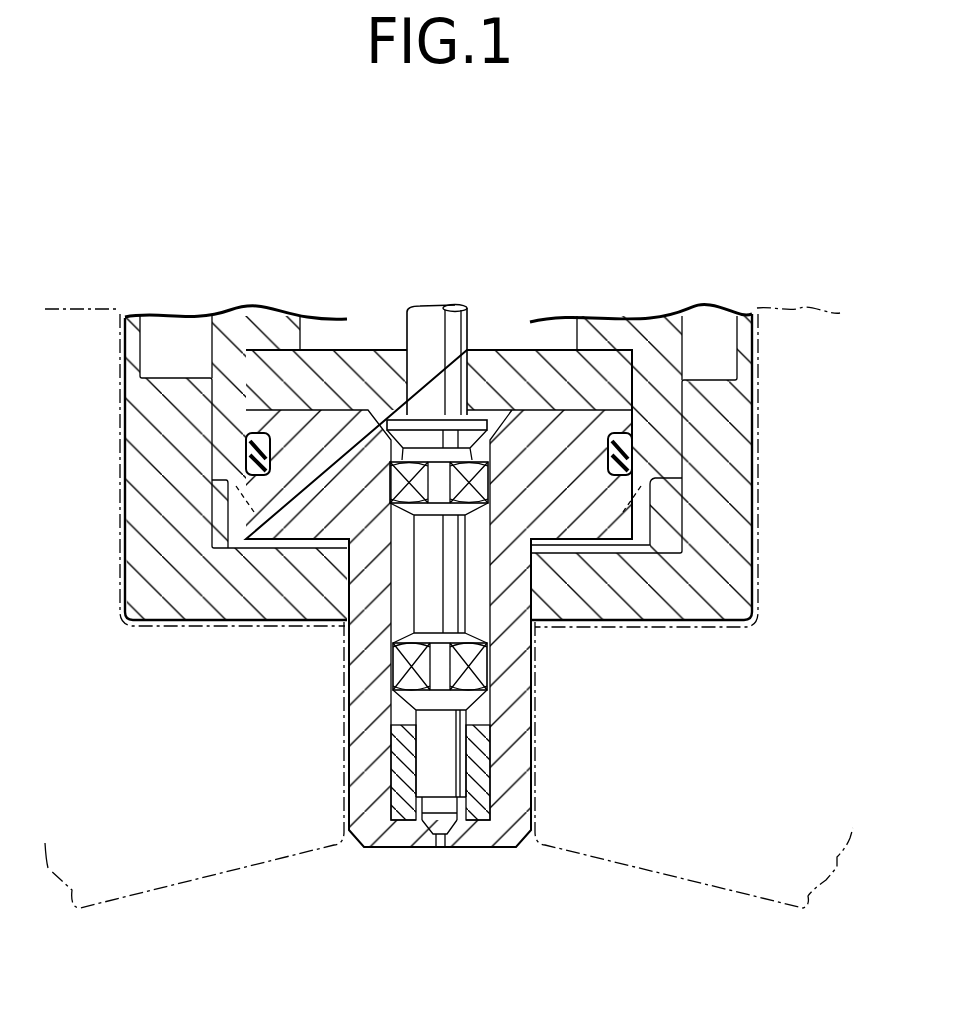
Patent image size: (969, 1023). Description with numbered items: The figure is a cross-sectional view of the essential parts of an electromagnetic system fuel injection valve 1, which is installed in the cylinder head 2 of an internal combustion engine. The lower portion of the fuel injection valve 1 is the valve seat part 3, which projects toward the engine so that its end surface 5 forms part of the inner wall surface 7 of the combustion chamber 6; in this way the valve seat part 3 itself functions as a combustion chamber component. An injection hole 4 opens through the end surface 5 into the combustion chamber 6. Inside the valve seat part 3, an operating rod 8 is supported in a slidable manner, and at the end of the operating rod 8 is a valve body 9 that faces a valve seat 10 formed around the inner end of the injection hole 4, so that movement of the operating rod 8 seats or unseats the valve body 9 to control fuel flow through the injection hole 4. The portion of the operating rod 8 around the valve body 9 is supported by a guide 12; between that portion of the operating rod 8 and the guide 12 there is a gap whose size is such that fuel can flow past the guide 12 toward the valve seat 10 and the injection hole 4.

The fuel injection valve 1 is at (622, 305).
The cylinder head 2 is at (792, 306).
The valve seat part 3 is at (349, 691).
The injection hole 4 is at (440, 850).
The end surface 5 is at (490, 850).
The combustion chamber 6 is at (453, 957).
The inner wall surface 7 is at (673, 877).
The operating rod 8 is at (418, 321).
The valve body 9 is at (467, 811).
The valve seat 10 is at (428, 815).
The guide 12 is at (490, 762).